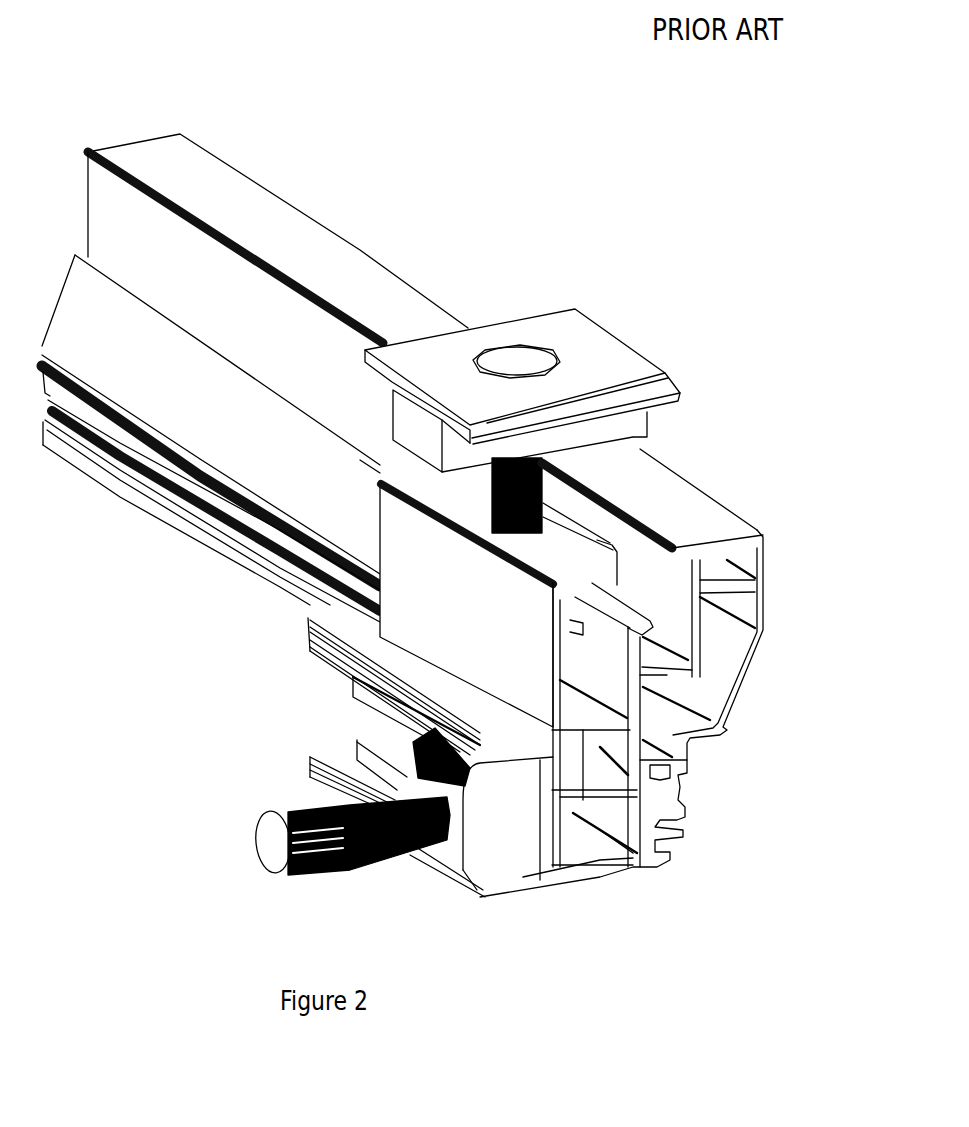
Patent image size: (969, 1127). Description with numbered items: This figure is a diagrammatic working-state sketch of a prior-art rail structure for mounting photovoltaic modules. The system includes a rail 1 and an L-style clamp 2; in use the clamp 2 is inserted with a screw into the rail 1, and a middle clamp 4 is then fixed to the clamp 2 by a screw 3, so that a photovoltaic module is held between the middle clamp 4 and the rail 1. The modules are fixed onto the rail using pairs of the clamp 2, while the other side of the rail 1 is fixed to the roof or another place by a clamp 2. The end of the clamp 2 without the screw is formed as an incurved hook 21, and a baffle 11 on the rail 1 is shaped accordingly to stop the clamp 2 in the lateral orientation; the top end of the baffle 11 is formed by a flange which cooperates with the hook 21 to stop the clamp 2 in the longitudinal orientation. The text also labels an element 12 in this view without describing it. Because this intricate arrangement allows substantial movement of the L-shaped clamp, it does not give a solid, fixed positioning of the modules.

The rail 1 is at (402, 278).
The clamp 2 is at (597, 557).
The screw 3 is at (600, 482).
The middle clamp 4 is at (615, 340).
The baffle 11 is at (562, 812).
The slider nut 12 is at (523, 820).
The incurved hook 21 is at (577, 813).